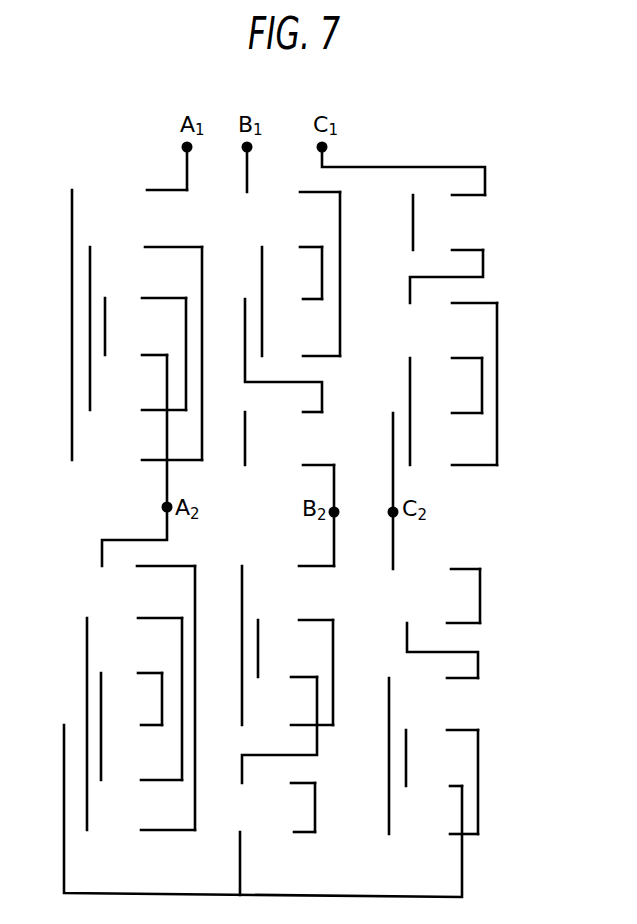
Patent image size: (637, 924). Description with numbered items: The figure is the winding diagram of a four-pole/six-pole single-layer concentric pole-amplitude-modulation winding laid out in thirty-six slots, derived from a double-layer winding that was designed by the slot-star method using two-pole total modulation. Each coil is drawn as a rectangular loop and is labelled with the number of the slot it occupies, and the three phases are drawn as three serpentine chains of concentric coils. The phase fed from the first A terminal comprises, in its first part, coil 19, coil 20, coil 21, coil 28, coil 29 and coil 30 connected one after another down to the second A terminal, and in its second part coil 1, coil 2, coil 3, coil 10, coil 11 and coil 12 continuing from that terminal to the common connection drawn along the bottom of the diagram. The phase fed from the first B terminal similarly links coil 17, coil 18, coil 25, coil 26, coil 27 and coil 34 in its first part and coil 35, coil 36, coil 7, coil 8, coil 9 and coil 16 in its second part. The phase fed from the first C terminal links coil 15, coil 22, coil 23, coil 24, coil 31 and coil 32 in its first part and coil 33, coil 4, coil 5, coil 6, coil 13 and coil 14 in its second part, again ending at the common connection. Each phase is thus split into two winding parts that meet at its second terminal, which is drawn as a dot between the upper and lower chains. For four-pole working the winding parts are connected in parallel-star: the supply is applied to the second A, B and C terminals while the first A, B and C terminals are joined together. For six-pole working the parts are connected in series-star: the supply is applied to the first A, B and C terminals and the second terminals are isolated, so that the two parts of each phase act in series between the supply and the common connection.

The coil 1 is at (102, 566).
The coil 2 is at (87, 618).
The coil 3 is at (101, 673).
The coil 4 is at (407, 623).
The coil 5 is at (389, 678).
The coil 6 is at (406, 730).
The coil 7 is at (258, 677).
The coil 8 is at (242, 725).
The coil 9 is at (242, 783).
The coil 10 is at (64, 725).
The coil 11 is at (101, 780).
The coil 12 is at (87, 830).
The coil 13 is at (406, 786).
The coil 14 is at (389, 834).
The coil 15 is at (413, 195).
The coil 16 is at (240, 832).
The coil 17 is at (247, 192).
The coil 18 is at (262, 247).
The coil 19 is at (72, 190).
The coil 20 is at (90, 247).
The coil 21 is at (105, 298).
The coil 22 is at (413, 250).
The coil 23 is at (410, 303).
The coil 24 is at (410, 358).
The coil 25 is at (245, 299).
The coil 26 is at (262, 356).
The coil 27 is at (245, 412).
The coil 28 is at (105, 355).
The coil 29 is at (90, 410).
The coil 30 is at (72, 460).
The coil 31 is at (393, 413).
The coil 32 is at (410, 465).
The coil 33 is at (392, 569).
The coil 34 is at (245, 465).
The coil 35 is at (242, 566).
The coil 36 is at (258, 620).